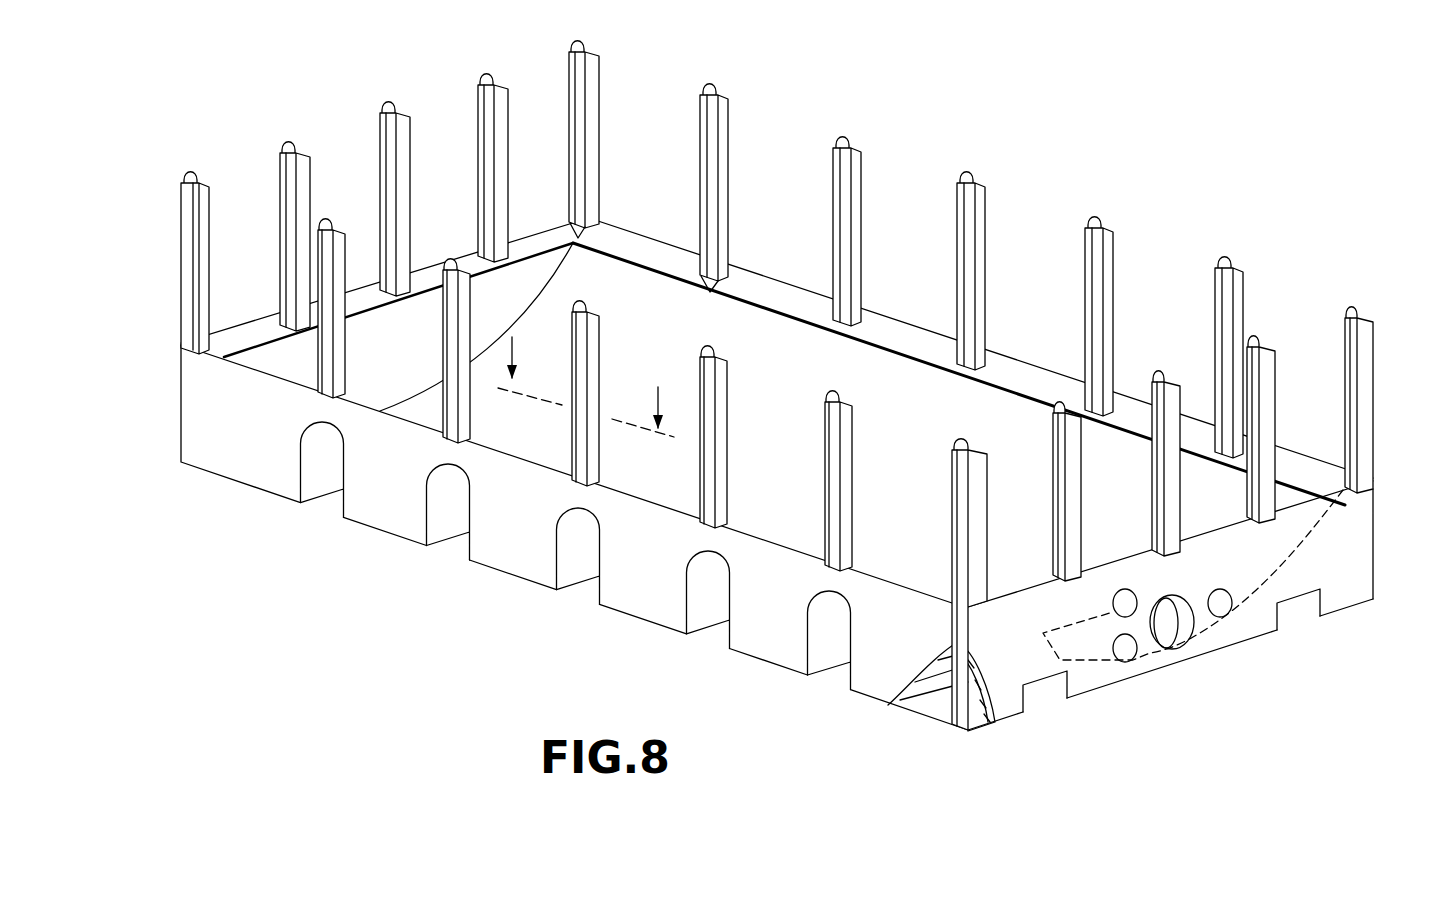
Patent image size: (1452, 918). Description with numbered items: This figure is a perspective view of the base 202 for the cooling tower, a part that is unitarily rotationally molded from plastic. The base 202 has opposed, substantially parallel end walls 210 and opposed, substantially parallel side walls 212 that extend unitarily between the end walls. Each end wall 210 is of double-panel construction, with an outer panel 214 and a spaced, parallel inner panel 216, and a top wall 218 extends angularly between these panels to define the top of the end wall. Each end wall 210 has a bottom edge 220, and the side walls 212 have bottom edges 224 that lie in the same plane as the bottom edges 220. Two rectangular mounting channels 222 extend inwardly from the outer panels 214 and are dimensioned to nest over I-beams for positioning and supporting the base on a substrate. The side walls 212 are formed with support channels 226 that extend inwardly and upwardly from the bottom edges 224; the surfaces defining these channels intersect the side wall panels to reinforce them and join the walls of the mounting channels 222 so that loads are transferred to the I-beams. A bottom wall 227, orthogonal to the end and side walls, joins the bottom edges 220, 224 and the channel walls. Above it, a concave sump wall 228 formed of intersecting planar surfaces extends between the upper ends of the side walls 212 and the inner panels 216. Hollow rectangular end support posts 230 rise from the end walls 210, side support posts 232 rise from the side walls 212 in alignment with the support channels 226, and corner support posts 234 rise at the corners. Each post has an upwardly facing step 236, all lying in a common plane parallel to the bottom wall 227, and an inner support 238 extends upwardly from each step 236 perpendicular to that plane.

The base 202 is at (1108, 146).
The end wall 210 is at (256, 311).
The side wall 212 is at (1028, 360).
The outer panel 214 is at (1262, 632).
The inner panel 216 is at (368, 365).
The top wall 218 is at (427, 273).
The bottom edge 220 is at (1093, 697).
The rectangular mounting channel 222 is at (1057, 697).
The bottom edge 224 is at (633, 622).
The support channel 226 is at (436, 538).
The bottom wall 227 is at (932, 705).
The concave sump wall 228 is at (758, 470).
The end support post 230 is at (303, 147).
The side support post 232 is at (955, 207).
The corner support post 234 is at (186, 196).
The step 236 is at (1280, 350).
The inner support 238 is at (578, 45).